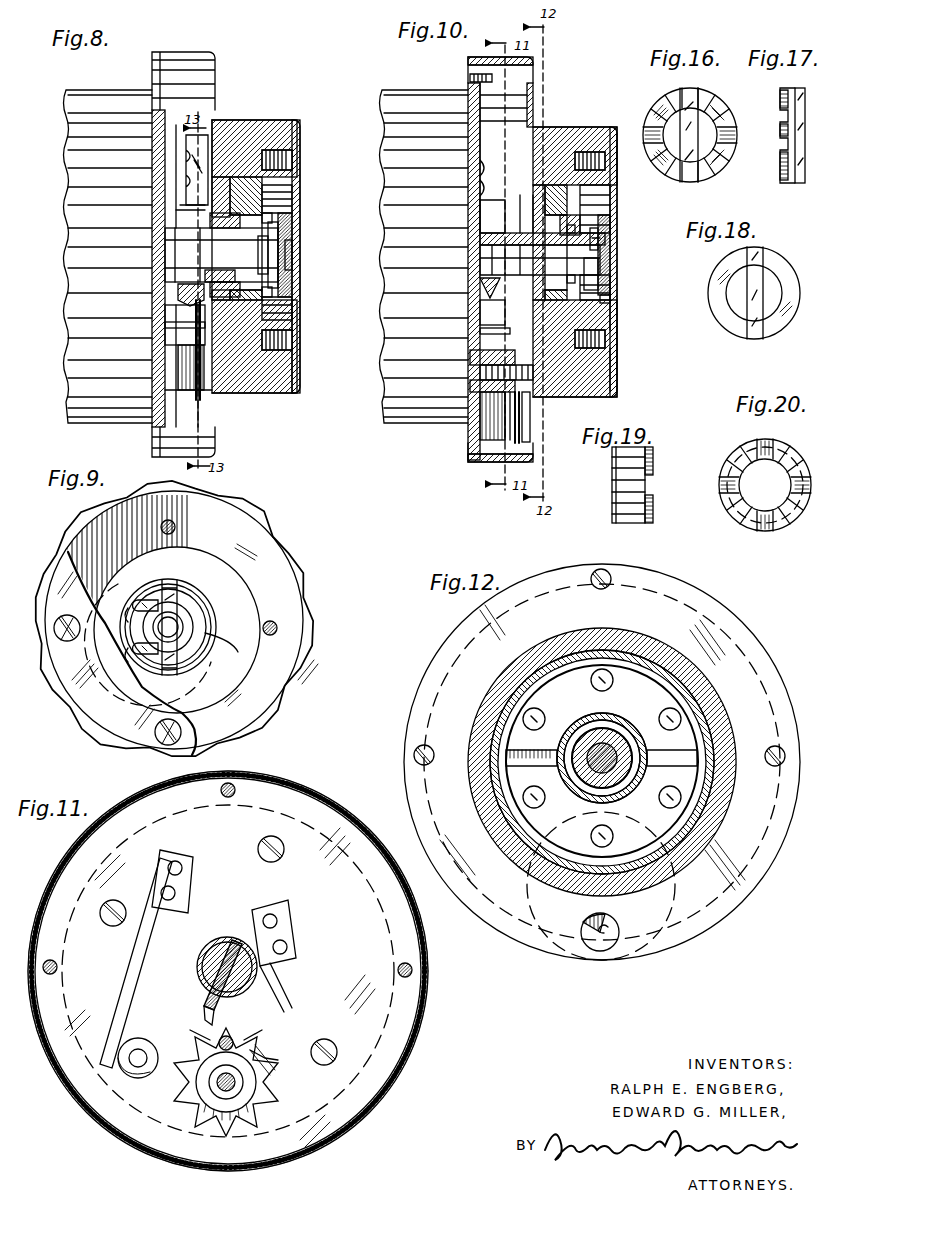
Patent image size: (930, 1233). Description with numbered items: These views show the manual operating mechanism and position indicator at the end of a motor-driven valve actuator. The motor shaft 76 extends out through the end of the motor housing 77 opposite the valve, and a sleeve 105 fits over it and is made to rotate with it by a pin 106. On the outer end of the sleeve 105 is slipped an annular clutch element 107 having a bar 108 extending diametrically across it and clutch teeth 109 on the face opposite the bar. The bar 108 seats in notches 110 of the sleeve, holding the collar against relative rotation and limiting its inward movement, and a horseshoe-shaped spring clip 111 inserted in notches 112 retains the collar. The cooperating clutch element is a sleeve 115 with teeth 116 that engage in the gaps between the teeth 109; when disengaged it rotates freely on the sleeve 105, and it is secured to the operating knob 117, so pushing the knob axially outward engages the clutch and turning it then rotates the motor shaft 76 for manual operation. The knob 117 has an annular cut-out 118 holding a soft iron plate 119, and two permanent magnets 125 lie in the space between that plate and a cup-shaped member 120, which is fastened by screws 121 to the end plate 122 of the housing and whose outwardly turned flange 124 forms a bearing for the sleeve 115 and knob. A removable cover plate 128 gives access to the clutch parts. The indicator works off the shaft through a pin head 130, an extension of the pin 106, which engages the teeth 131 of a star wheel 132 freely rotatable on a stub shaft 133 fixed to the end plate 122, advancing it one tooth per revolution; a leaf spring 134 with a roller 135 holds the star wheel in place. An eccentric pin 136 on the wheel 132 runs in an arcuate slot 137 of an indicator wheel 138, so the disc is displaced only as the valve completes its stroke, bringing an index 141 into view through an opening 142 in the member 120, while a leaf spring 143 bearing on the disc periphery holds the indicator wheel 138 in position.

In FIG. 10, the motor shaft 76 is at (482, 256).
In FIG. 9, the motor shaft 76 is at (182, 627).
In FIG. 11, the motor shaft 76 is at (212, 960).
In FIG. 12, the motor shaft 76 is at (605, 745).
In FIG. 8, the motor housing 77 is at (70, 254).
In FIG. 10, the motor housing 77 is at (392, 268).
In FIG. 11, the motor housing 77 is at (372, 912).
In FIG. 12, the motor housing 77 is at (680, 625).
In FIG. 8, the sleeve 105 is at (168, 246).
In FIG. 10, the sleeve 105 is at (520, 232).
In FIG. 9, the sleeve 105 is at (185, 618).
In FIG. 12, the sleeve 105 is at (580, 771).
In FIG. 10, the pin 106 is at (482, 237).
In FIG. 11, the pin 106 is at (238, 945).
In FIG. 8, the clutch element 107 is at (292, 280).
In FIG. 10, the clutch element 107 is at (606, 302).
In FIG. 16, the clutch element 107 is at (716, 170).
In FIG. 17, the clutch element 107 is at (792, 184).
In FIG. 18, the clutch element 107 is at (774, 262).
In FIG. 9, the clutch element 107 is at (188, 597).
In FIG. 8, the bar 108 is at (292, 258).
In FIG. 10, the bar 108 is at (612, 265).
In FIG. 16, the bar 108 is at (698, 128).
In FIG. 17, the bar 108 is at (800, 89).
In FIG. 18, the bar 108 is at (746, 322).
In FIG. 9, the bar 108 is at (170, 590).
In FIG. 8, the clutch teeth 109 is at (284, 210).
In FIG. 10, the clutch teeth 109 is at (612, 224).
In FIG. 16, the clutch teeth 109 is at (692, 92).
In FIG. 17, the clutch teeth 109 is at (780, 165).
In FIG. 10, the notches 110 is at (608, 238).
In FIG. 9, the notches 110 is at (158, 643).
In FIG. 8, the spring clip 111 is at (286, 222).
In FIG. 10, the spring clip 111 is at (613, 235).
In FIG. 9, the spring clip 111 is at (206, 634).
In FIG. 8, the notches 112 is at (292, 238).
In FIG. 10, the notches 112 is at (612, 285).
In FIG. 9, the notches 112 is at (158, 604).
In FIG. 8, the sleeve 115 is at (210, 220).
In FIG. 10, the sleeve 115 is at (575, 212).
In FIG. 19, the sleeve 115 is at (622, 493).
In FIG. 20, the sleeve 115 is at (778, 522).
In FIG. 12, the sleeve 115 is at (592, 715).
In FIG. 8, the teeth 116 is at (268, 190).
In FIG. 10, the teeth 116 is at (596, 250).
In FIG. 19, the teeth 116 is at (654, 470).
In FIG. 20, the teeth 116 is at (788, 460).
In FIG. 8, the operating knob 117 is at (278, 124).
In FIG. 10, the operating knob 117 is at (598, 130).
In FIG. 9, the operating knob 117 is at (286, 582).
In FIG. 12, the operating knob 117 is at (630, 628).
In FIG. 8, the annular cut-out 118 is at (224, 150).
In FIG. 10, the annular cut-out 118 is at (540, 165).
In FIG. 12, the annular cut-out 118 is at (700, 690).
In FIG. 8, the soft iron plate 119 is at (240, 165).
In FIG. 10, the soft iron plate 119 is at (556, 200).
In FIG. 12, the soft iron plate 119 is at (708, 702).
In FIG. 8, the cup-shaped member 120 is at (190, 60).
In FIG. 10, the cup-shaped member 120 is at (535, 100).
In FIG. 9, the cup-shaped member 120 is at (303, 600).
In FIG. 11, the cup-shaped member 120 is at (416, 1025).
In FIG. 12, the cup-shaped member 120 is at (740, 637).
In FIG. 10, the screws 121 is at (468, 78).
In FIG. 11, the screws 121 is at (228, 798).
In FIG. 12, the screws 121 is at (601, 569).
In FIG. 8, the end plate 122 is at (150, 160).
In FIG. 10, the end plate 122 is at (470, 68).
In FIG. 11, the end plate 122 is at (301, 800).
In FIG. 8, the flange 124 is at (222, 270).
In FIG. 10, the flange 124 is at (530, 200).
In FIG. 12, the flange 124 is at (628, 738).
In FIG. 8, the permanent magnets 125 is at (268, 120).
In FIG. 10, the permanent magnets 125 is at (530, 172).
In FIG. 12, the permanent magnets 125 is at (581, 668).
In FIG. 8, the cover plate 128 is at (300, 335).
In FIG. 10, the cover plate 128 is at (618, 335).
In FIG. 9, the cover plate 128 is at (87, 708).
In FIG. 8, the pin head 130 is at (176, 290).
In FIG. 10, the pin head 130 is at (484, 300).
In FIG. 11, the pin head 130 is at (206, 1002).
In FIG. 8, the teeth 131 is at (172, 310).
In FIG. 10, the teeth 131 is at (486, 315).
In FIG. 11, the teeth 131 is at (176, 1044).
In FIG. 8, the star wheel 132 is at (176, 352).
In FIG. 10, the star wheel 132 is at (481, 425).
In FIG. 11, the star wheel 132 is at (272, 1060).
In FIG. 8, the stub shaft 133 is at (266, 394).
In FIG. 10, the stub shaft 133 is at (476, 369).
In FIG. 11, the stub shaft 133 is at (223, 1082).
In FIG. 8, the leaf spring 134 is at (176, 170).
In FIG. 11, the leaf spring 134 is at (128, 952).
In FIG. 11, the roller 135 is at (135, 1088).
In FIG. 8, the eccentric pin 136 is at (176, 325).
In FIG. 10, the eccentric pin 136 is at (492, 335).
In FIG. 11, the eccentric pin 136 is at (236, 1034).
In FIG. 10, the arcuate slot 137 is at (540, 420).
In FIG. 8, the indicator wheel 138 is at (200, 415).
In FIG. 10, the indicator wheel 138 is at (522, 433).
In FIG. 12, the indicator wheel 138 is at (672, 935).
In FIG. 12, the index 141 is at (592, 947).
In FIG. 10, the opening 142 is at (530, 442).
In FIG. 12, the opening 142 is at (610, 947).
In FIG. 8, the leaf spring 143 is at (192, 205).
In FIG. 10, the leaf spring 143 is at (481, 190).
In FIG. 11, the leaf spring 143 is at (282, 985).